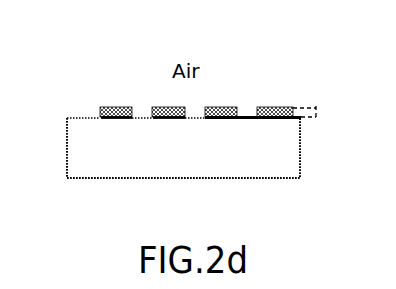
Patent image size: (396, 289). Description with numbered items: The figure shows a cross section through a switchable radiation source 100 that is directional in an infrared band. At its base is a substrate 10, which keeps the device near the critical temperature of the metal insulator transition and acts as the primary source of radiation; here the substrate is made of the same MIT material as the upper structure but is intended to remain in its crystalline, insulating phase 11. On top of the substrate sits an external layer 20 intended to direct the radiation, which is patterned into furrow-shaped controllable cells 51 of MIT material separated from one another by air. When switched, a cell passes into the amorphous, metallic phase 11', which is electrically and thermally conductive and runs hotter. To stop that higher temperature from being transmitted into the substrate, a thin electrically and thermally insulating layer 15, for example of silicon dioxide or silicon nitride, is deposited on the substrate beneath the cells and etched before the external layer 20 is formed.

The switchable radiation source 100 is at (277, 70).
The substrate 10 is at (58, 117).
The crystalline phase 11 is at (183, 176).
The amorphous phase 11' is at (116, 81).
The electrically and thermally insulating layer 15 is at (114, 121).
The controllable cells 51 is at (220, 107).
The external layer 20 is at (316, 112).